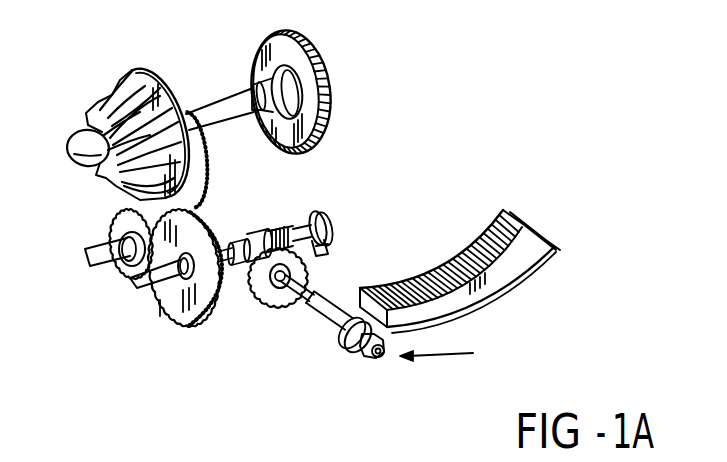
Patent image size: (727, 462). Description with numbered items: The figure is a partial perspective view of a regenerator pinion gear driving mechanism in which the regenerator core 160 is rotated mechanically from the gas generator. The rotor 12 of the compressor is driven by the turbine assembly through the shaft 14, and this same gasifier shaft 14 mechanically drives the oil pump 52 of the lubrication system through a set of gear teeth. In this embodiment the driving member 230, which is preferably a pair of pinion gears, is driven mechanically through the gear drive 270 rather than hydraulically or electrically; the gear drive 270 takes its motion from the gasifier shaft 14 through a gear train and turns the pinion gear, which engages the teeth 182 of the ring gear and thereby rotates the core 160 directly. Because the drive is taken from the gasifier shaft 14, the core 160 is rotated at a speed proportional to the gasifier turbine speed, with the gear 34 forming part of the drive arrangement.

The rotor 12 is at (128, 65).
The shaft 14 is at (210, 106).
The gear 34 is at (330, 80).
The oil pump 52 is at (332, 220).
The core 160 is at (507, 270).
The teeth 182 is at (357, 353).
The driving member 230 is at (243, 313).
The gear drive 270 is at (467, 352).